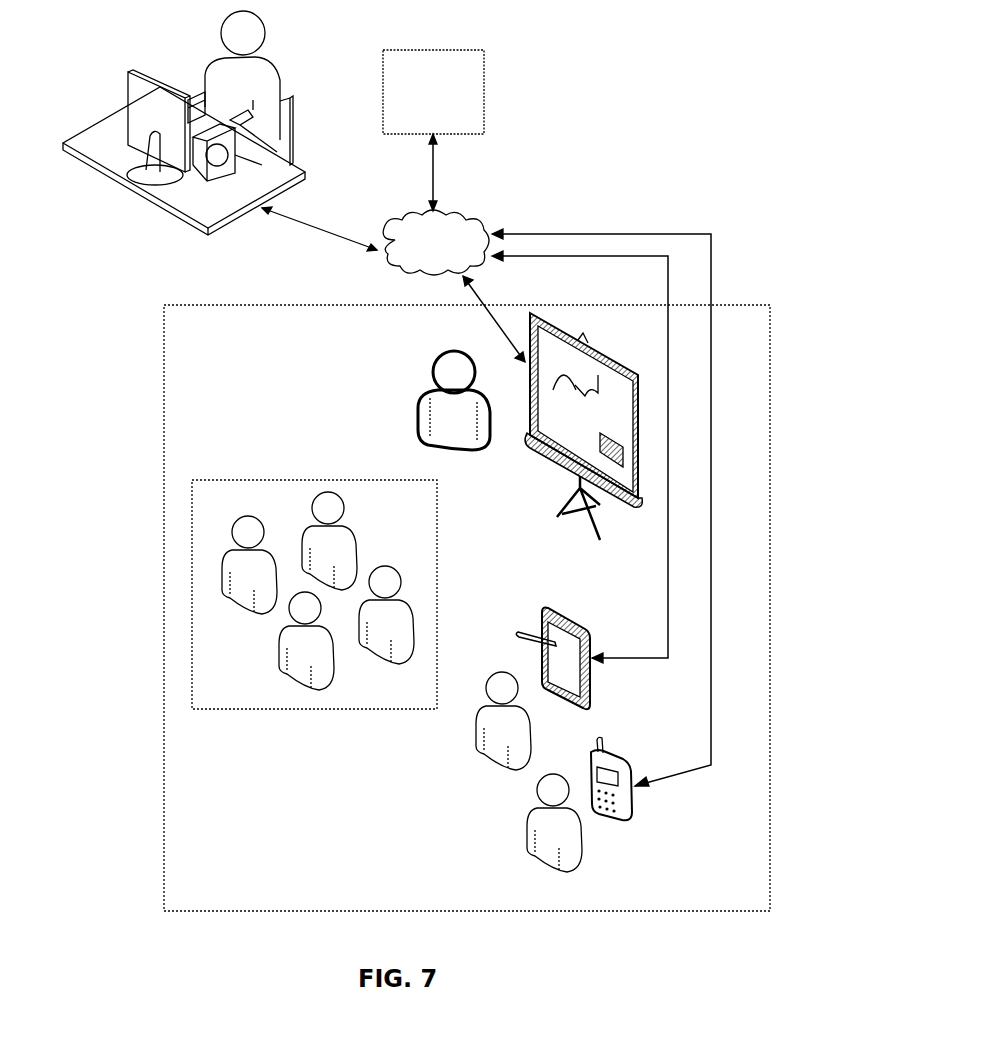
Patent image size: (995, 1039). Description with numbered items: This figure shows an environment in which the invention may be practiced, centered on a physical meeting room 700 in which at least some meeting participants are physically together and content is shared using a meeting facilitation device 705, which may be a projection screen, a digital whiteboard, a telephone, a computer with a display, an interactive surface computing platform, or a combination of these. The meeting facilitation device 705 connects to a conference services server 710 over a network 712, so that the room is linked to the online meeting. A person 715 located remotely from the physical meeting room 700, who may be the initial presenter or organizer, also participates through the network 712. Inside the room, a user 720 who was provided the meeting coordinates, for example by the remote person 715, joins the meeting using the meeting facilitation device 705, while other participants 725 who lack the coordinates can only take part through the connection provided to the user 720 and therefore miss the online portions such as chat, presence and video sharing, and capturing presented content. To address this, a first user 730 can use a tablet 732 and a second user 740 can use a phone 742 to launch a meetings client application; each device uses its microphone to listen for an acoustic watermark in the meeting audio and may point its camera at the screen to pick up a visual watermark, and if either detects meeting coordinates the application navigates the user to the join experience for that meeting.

The physical meeting room 700 is at (163, 378).
The meeting facilitation device 705 is at (548, 455).
The conference services server 710 is at (485, 63).
The network 712 is at (460, 215).
The person located remotely 715 is at (273, 63).
The user 720 is at (428, 390).
The other participants 725 is at (268, 480).
The first user 730 is at (472, 735).
The tablet 732 is at (568, 614).
The second user 740 is at (528, 833).
The phone 742 is at (623, 828).